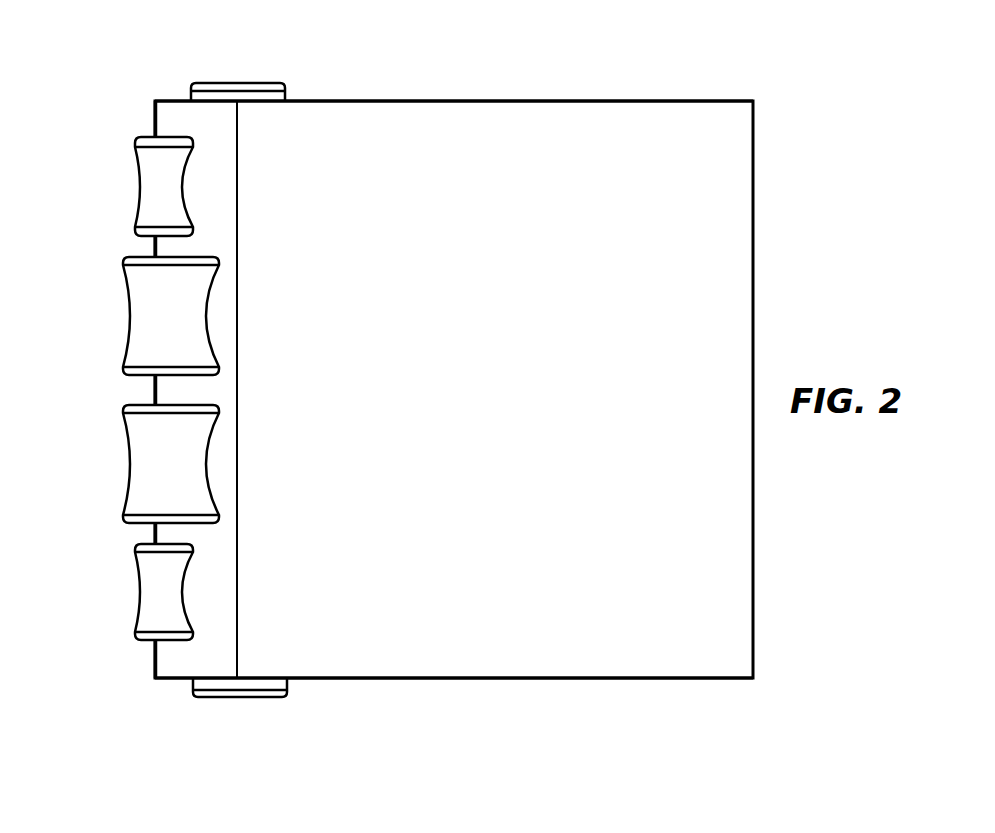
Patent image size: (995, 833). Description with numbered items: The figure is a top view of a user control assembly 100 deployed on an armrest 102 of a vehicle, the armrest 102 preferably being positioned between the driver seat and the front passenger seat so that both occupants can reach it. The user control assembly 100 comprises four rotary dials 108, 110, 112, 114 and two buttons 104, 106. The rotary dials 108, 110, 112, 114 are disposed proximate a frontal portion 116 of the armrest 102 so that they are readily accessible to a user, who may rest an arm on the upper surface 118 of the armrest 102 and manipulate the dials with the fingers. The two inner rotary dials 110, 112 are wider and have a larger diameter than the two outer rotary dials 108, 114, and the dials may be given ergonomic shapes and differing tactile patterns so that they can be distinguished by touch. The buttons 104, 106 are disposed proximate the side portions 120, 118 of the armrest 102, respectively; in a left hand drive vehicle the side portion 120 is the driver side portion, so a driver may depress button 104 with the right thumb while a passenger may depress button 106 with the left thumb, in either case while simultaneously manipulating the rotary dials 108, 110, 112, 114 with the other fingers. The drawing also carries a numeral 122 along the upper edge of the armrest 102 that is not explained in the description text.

The spool assembly 100 is at (703, 53).
The housing body 102 is at (755, 163).
The lower end cap 104 is at (207, 698).
The upper end cap 106 is at (215, 83).
The first roller 108 is at (140, 590).
The second roller 110 is at (124, 433).
The third roller 112 is at (124, 287).
The fourth roller 114 is at (140, 178).
The shaft 116 is at (154, 110).
The front surface 118 is at (515, 414).
The bottom edge 120 is at (655, 680).
The top edge 122 is at (610, 100).